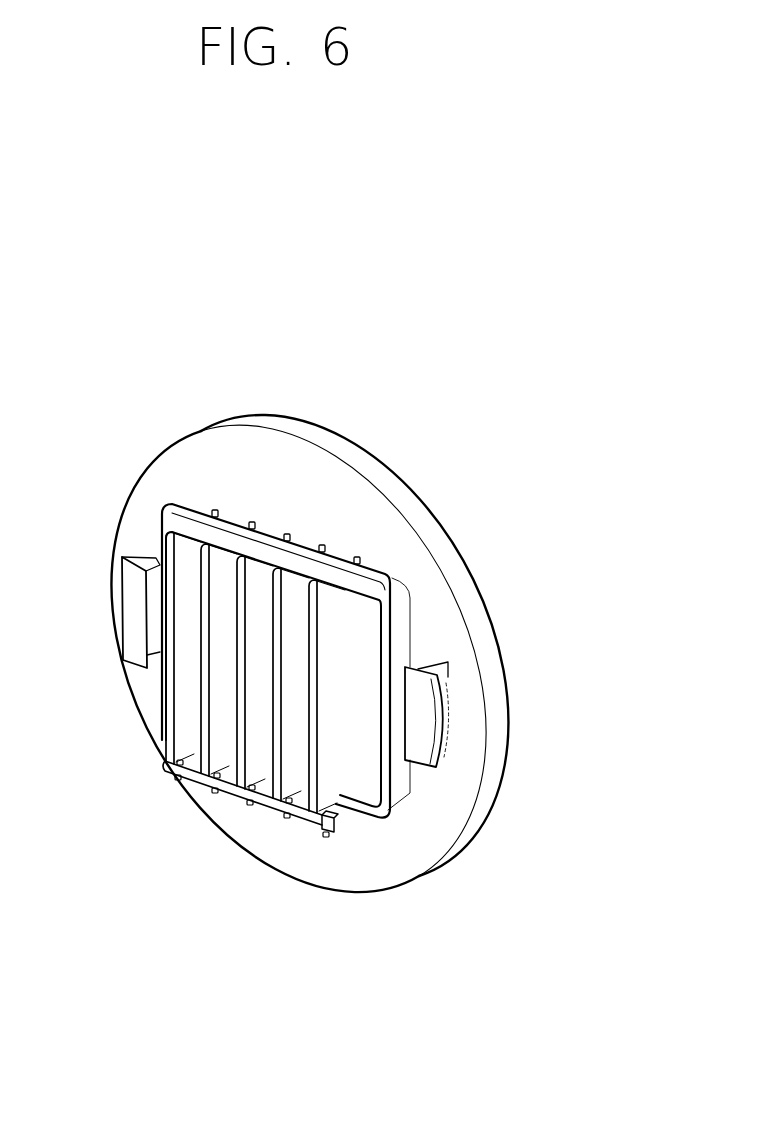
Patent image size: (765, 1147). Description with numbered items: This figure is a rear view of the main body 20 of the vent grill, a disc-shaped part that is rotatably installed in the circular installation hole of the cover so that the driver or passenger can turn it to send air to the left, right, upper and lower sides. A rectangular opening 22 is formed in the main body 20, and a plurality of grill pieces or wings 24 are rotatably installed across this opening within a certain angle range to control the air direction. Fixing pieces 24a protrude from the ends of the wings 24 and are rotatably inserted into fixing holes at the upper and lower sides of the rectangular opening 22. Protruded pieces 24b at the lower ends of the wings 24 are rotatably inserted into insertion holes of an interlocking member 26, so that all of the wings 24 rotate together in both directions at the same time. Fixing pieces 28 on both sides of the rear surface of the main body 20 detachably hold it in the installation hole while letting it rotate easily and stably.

The main body 20 is at (522, 589).
The rectangular opening 22 is at (388, 575).
The wings 24 is at (167, 748).
The fixing pieces 24a is at (255, 522).
The protruded pieces 24b is at (287, 819).
The interlocking member 26 is at (330, 832).
The fixing piece 28 is at (124, 616).